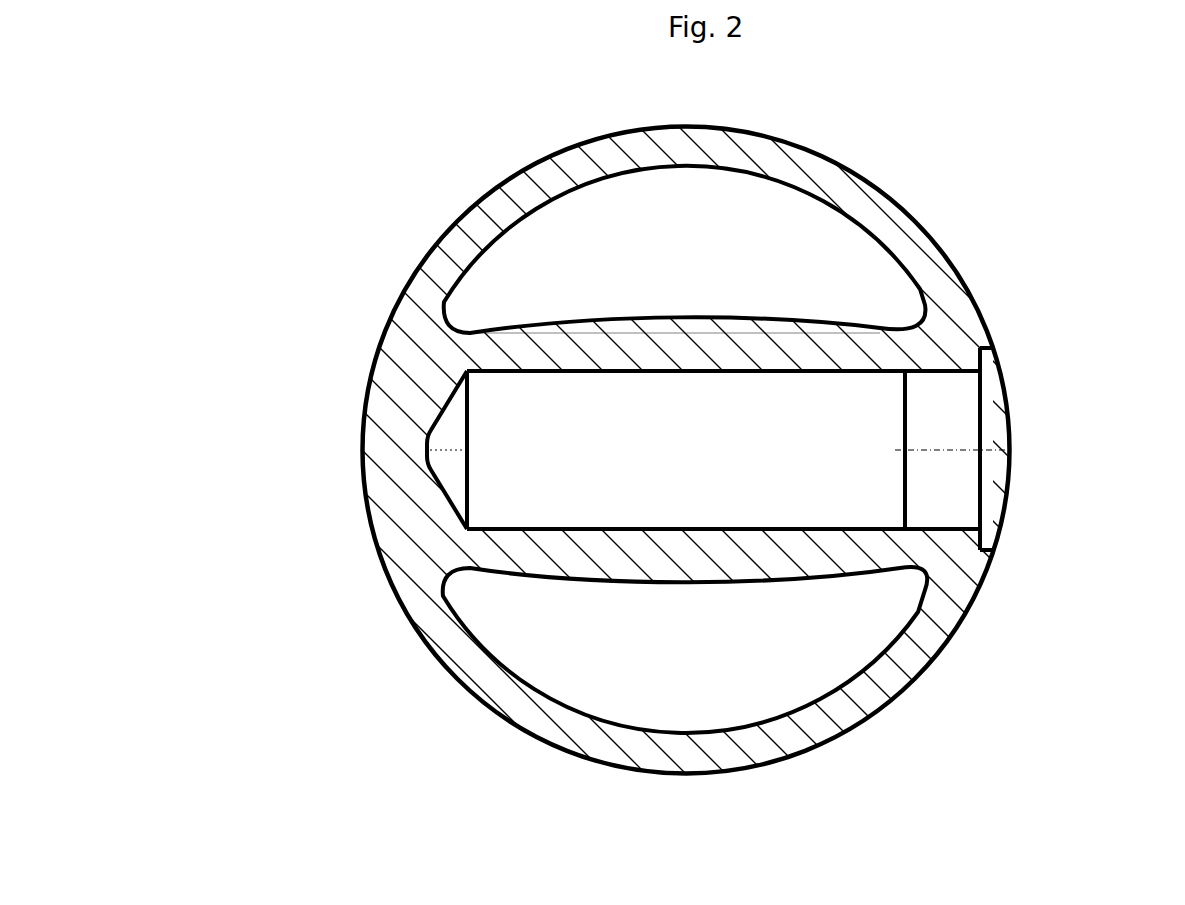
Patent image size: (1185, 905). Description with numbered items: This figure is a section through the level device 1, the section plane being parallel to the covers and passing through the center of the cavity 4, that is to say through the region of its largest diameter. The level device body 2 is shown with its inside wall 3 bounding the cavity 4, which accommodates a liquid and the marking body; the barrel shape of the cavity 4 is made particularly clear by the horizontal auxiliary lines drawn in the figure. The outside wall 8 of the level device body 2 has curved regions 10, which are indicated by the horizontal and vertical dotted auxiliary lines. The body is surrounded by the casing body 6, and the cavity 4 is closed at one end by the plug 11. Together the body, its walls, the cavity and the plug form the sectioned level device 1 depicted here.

The level device 1 is at (892, 142).
The level device body 2 is at (842, 540).
The inside wall of the level device body 3 is at (760, 361).
The cavity for accommodating a liquid and the marking body 4 is at (745, 412).
The casing body 6 is at (905, 693).
The outside wall of the level device body 8 is at (770, 583).
The curved regions 10 is at (620, 313).
The plug for closing the cavity 11 is at (952, 452).